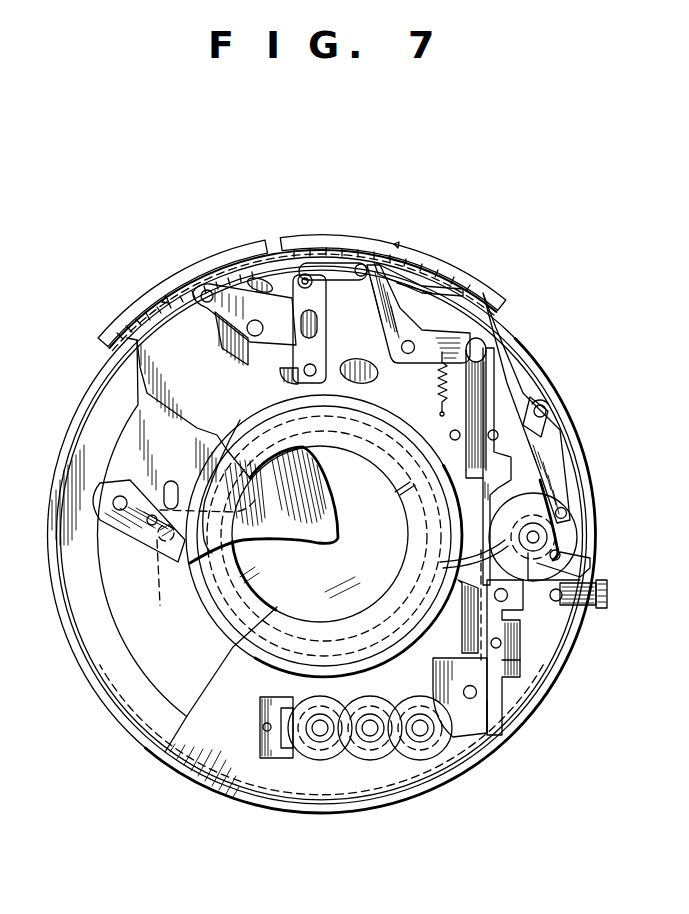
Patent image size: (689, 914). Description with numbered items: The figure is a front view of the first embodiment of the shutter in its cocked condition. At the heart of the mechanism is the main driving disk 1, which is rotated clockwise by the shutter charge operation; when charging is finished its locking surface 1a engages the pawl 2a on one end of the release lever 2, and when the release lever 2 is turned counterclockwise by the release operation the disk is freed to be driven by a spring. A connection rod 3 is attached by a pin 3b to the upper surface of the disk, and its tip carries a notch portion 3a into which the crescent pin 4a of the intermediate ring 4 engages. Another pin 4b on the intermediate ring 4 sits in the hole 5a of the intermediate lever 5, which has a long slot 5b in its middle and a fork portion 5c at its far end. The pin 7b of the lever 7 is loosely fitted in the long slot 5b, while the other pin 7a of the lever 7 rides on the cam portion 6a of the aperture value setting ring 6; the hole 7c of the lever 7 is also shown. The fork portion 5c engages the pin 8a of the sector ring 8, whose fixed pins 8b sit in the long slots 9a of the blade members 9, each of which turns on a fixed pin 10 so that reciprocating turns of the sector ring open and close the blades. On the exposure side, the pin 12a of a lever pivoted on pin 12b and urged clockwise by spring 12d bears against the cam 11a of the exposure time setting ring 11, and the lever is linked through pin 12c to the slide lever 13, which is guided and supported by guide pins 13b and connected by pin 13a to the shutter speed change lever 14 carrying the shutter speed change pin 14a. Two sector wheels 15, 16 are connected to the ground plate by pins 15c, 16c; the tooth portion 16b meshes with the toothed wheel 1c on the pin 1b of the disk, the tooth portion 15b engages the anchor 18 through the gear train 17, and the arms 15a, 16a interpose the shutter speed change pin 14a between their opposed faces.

The main driving disk 1 is at (580, 550).
The locking surface 1a is at (590, 563).
The pin of main driving disk 1b is at (540, 537).
The toothed wheel 1c is at (520, 500).
The release lever 2 is at (596, 606).
The pawl 2a is at (604, 594).
The connection rod 3 is at (552, 466).
The notch portion 3a is at (546, 400).
The pin 3b is at (567, 513).
The intermediate ring 4 is at (507, 357).
The crescent pin 4a is at (548, 412).
The pin 4b is at (305, 273).
The intermediate lever 5 is at (322, 336).
The hole 5a is at (330, 264).
The long slot 5b is at (363, 264).
The fork portion 5c is at (324, 370).
The aperture value setting ring 6 is at (105, 345).
The cam portion 6a is at (128, 318).
The lever 7 is at (225, 310).
The pin 7a is at (207, 290).
The pin 7b is at (270, 335).
The lever hole 7c is at (248, 332).
The sector ring 8 is at (202, 456).
The pin 8a is at (280, 376).
The fixed pins 8b is at (158, 545).
The blade members 9 is at (100, 537).
The long slot 9a is at (150, 528).
The fixed pin 10 is at (113, 500).
The exposure time setting ring 11 is at (486, 300).
The cam 11a is at (433, 285).
The pin 12a is at (378, 268).
The pin 12b is at (448, 290).
The pin 12c is at (484, 343).
The spring 12d is at (439, 385).
The slide lever 13 is at (484, 410).
The pin 13a is at (470, 518).
The guide pins 13b is at (499, 436).
The shutter speed change lever 14 is at (466, 610).
The shutter speed change pin 14a is at (508, 680).
The sector wheel 15 is at (470, 736).
The arm 15a is at (477, 695).
The tooth portion 15b is at (445, 755).
The pin 15c is at (490, 717).
The sector wheel 16 is at (522, 622).
The arm 16a is at (500, 648).
The tooth portion 16b is at (440, 562).
The pin 16c is at (561, 600).
The gear train 17 is at (370, 762).
The anchor 18 is at (277, 760).